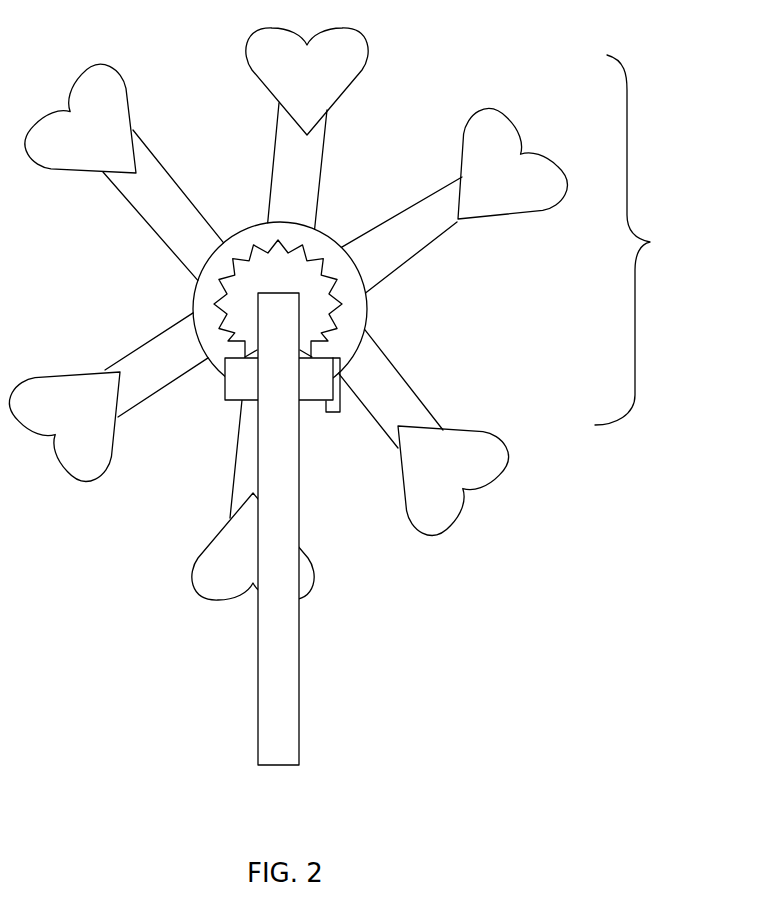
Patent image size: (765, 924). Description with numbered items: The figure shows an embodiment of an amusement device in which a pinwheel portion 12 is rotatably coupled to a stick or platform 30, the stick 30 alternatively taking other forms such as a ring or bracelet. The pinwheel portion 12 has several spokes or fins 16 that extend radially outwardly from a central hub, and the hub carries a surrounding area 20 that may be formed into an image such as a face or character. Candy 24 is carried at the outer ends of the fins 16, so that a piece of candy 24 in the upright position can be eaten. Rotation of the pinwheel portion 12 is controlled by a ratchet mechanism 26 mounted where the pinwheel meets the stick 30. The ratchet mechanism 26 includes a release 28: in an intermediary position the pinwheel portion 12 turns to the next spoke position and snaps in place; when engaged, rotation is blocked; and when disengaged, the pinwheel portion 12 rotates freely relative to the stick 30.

The pinwheel portion 12 is at (650, 242).
The spokes or fins 16 is at (172, 175).
The surrounding area 20 is at (338, 236).
The candy 24 is at (128, 82).
The ratchet mechanism 26 is at (225, 400).
The release 28 is at (330, 413).
The stick or platform 30 is at (298, 647).